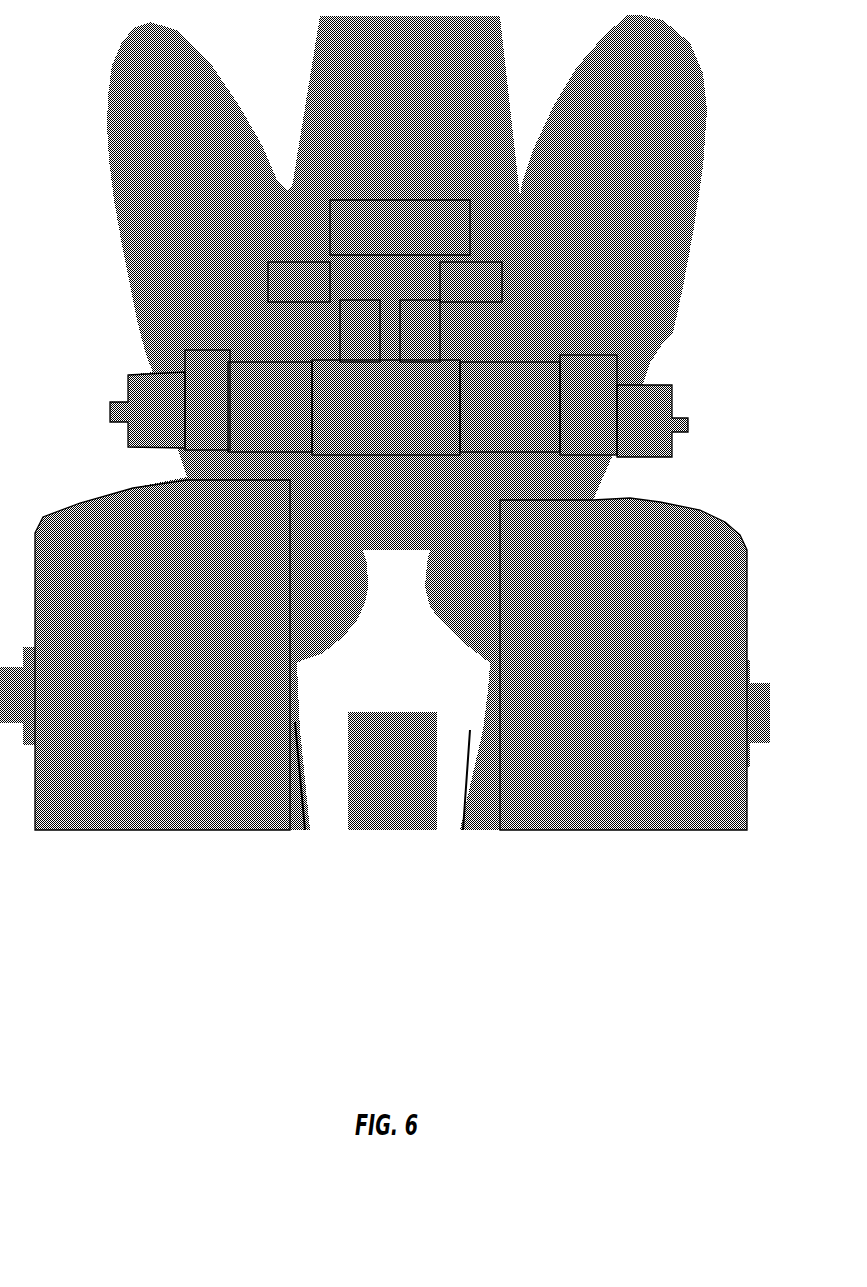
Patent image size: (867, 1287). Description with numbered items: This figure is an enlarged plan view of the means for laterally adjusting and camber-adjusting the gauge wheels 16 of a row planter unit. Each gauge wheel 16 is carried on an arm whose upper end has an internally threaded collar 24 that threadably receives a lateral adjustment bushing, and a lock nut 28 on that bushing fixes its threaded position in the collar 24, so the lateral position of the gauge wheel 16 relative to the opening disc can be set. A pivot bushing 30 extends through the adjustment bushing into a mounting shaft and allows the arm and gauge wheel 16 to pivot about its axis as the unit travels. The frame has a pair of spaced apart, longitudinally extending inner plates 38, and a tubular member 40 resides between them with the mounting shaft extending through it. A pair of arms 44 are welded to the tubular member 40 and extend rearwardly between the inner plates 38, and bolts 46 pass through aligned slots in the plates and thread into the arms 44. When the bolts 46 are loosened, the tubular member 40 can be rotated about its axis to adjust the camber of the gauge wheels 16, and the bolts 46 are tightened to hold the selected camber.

The gauge wheels 16 is at (80, 503).
The internally threaded collar 24 is at (272, 395).
The lock nut 28 is at (190, 348).
The pivot bushing 30 is at (133, 372).
The inner plates 38 is at (340, 242).
The tubular member 40 is at (401, 415).
The arms 44 is at (360, 350).
The bolts 46 is at (300, 262).